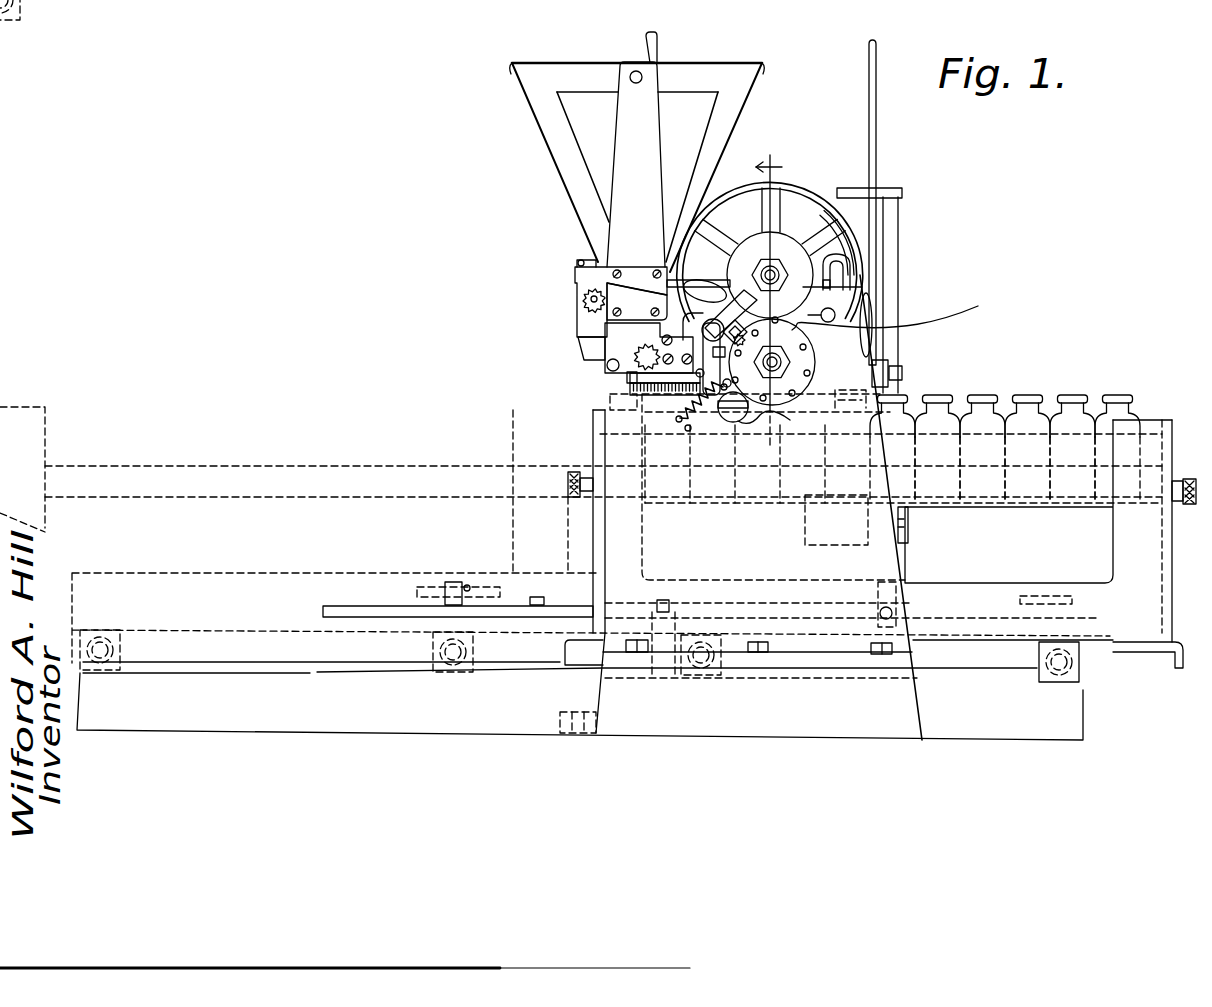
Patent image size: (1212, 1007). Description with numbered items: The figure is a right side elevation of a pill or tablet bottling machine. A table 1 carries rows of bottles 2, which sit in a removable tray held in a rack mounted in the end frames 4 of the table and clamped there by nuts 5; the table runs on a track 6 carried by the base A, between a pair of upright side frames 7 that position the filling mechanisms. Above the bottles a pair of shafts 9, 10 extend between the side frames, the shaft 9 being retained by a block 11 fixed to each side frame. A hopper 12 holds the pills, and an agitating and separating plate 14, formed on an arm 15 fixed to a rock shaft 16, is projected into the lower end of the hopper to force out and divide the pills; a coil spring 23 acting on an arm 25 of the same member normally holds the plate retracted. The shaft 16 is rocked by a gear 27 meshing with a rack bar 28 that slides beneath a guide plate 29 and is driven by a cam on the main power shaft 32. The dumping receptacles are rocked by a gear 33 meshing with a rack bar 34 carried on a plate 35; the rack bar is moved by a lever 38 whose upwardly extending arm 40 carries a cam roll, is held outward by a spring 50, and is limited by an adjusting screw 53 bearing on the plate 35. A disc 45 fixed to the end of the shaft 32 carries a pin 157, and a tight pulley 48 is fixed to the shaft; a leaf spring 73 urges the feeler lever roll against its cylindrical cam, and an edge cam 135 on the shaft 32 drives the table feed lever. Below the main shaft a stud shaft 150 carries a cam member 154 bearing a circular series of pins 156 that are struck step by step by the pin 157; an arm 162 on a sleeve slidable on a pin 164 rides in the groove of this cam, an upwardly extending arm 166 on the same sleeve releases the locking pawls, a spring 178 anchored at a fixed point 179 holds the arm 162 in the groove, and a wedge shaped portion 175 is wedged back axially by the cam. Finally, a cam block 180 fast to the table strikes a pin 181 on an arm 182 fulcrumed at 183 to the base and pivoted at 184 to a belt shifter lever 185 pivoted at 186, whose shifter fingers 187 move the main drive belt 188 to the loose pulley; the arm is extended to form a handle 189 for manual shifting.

The table 1 is at (1013, 518).
The bottles 2 is at (962, 393).
The end frames 4 is at (512, 516).
The nuts 5 is at (568, 473).
The track 6 is at (998, 675).
The side frames 7 is at (773, 487).
The shaft 9 is at (835, 315).
The shaft 10 is at (807, 329).
The block 11 is at (872, 296).
The hopper 12 is at (537, 123).
The agitating and separating plate 14 is at (595, 344).
The arm 15 is at (771, 301).
The shaft 16 is at (577, 302).
The coil spring 23 is at (594, 262).
The arm 25 is at (578, 261).
The gear 27 is at (587, 310).
The rack bar 28 is at (713, 278).
The guide plate 29 is at (634, 268).
The main power shaft 32 is at (766, 268).
The gear 33 is at (641, 351).
The rack bar 34 is at (626, 378).
The plate 35 is at (683, 384).
The lever 38 is at (662, 329).
The arm 40 is at (724, 322).
The disc 45 is at (790, 251).
The tight pulley 48 is at (808, 192).
The spring 50 is at (593, 421).
The adjusting screw 53 is at (749, 348).
The leaf spring 73 is at (851, 268).
The edge cam 135 is at (802, 247).
The stud shaft 150 is at (798, 388).
The cam member 154 is at (893, 385).
The pins 156 is at (804, 358).
The pin 157 is at (904, 313).
The arm 162 is at (763, 414).
The pin 164 is at (732, 423).
The arm 166 is at (716, 400).
The wedge shaped portion 175 is at (790, 306).
The spring 178 is at (688, 431).
The fixed point 179 is at (681, 420).
The cam block 180 is at (420, 580).
The pin 181 is at (471, 589).
The arm 182 is at (537, 608).
The fulcrum 183 is at (677, 604).
The pivot 184 is at (898, 611).
The belt shifter lever 185 is at (893, 348).
The pivot 186 is at (910, 524).
The shifter fingers 187 is at (851, 190).
The main drive belt 188 is at (655, 43).
The handle 189 is at (350, 608).
The base A is at (592, 575).